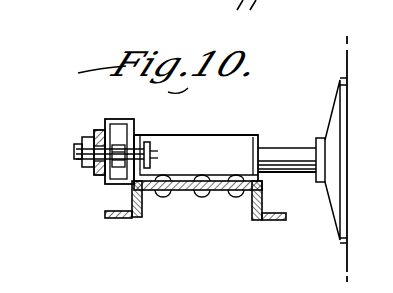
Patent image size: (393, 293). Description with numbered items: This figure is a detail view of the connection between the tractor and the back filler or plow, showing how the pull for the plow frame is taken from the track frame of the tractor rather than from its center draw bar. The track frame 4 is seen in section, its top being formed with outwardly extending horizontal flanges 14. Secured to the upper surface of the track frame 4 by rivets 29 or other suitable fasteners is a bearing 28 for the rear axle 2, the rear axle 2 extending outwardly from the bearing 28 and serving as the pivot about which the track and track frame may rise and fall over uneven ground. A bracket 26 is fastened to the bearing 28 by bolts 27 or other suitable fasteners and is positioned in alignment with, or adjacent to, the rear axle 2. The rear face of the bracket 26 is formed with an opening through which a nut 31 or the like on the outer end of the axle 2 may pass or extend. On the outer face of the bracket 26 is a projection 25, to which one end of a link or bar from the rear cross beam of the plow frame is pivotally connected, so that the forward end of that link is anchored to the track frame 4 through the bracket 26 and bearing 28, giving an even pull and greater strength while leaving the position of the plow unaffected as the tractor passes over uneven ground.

The rear axle 2 is at (287, 141).
The track frame 4 is at (197, 204).
The outwardly extending horizontal flanges 14 is at (208, 237).
The projection 25 is at (59, 166).
The bracket 26 is at (81, 174).
The bolts 27 is at (138, 135).
The bearings 28 is at (197, 141).
The rivets 29 is at (199, 209).
The nut 31 is at (101, 135).